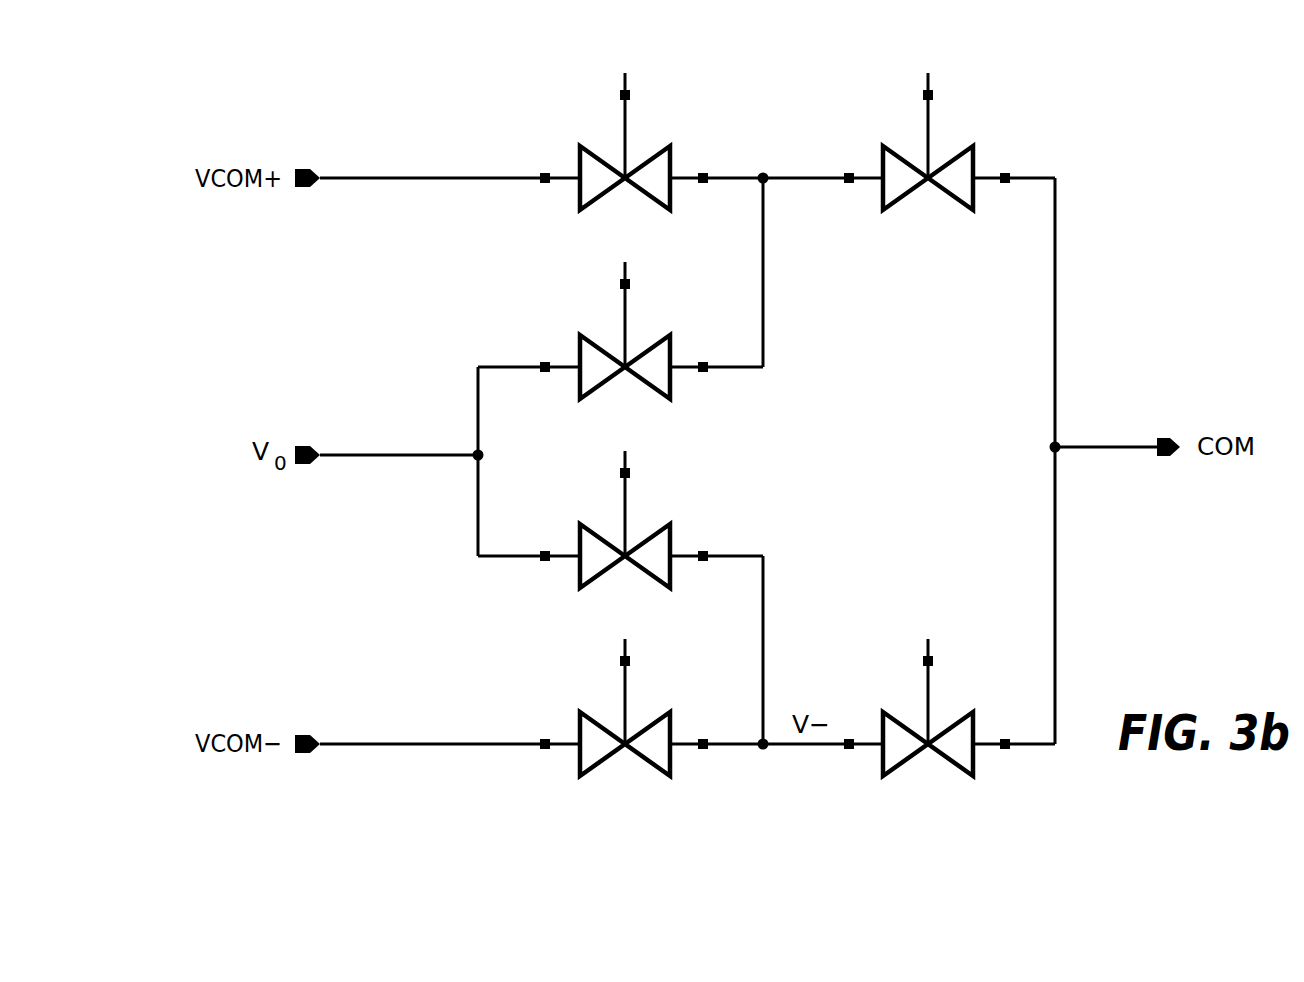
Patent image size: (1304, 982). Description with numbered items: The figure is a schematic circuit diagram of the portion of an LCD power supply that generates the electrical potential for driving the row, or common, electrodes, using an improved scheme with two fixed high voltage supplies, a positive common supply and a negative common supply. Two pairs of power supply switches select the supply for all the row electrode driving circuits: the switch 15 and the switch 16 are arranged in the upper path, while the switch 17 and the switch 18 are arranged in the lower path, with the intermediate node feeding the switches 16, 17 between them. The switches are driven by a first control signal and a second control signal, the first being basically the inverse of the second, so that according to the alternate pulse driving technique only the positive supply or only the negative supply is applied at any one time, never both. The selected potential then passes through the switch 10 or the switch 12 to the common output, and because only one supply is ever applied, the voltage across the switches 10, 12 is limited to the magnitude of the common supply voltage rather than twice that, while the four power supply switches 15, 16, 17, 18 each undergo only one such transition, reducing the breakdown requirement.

The switch 10 is at (928, 153).
The switch 12 is at (928, 719).
The power supply switch 15 is at (620, 153).
The power supply switch 16 is at (620, 342).
The power supply switch 17 is at (620, 531).
The power supply switch 18 is at (620, 719).